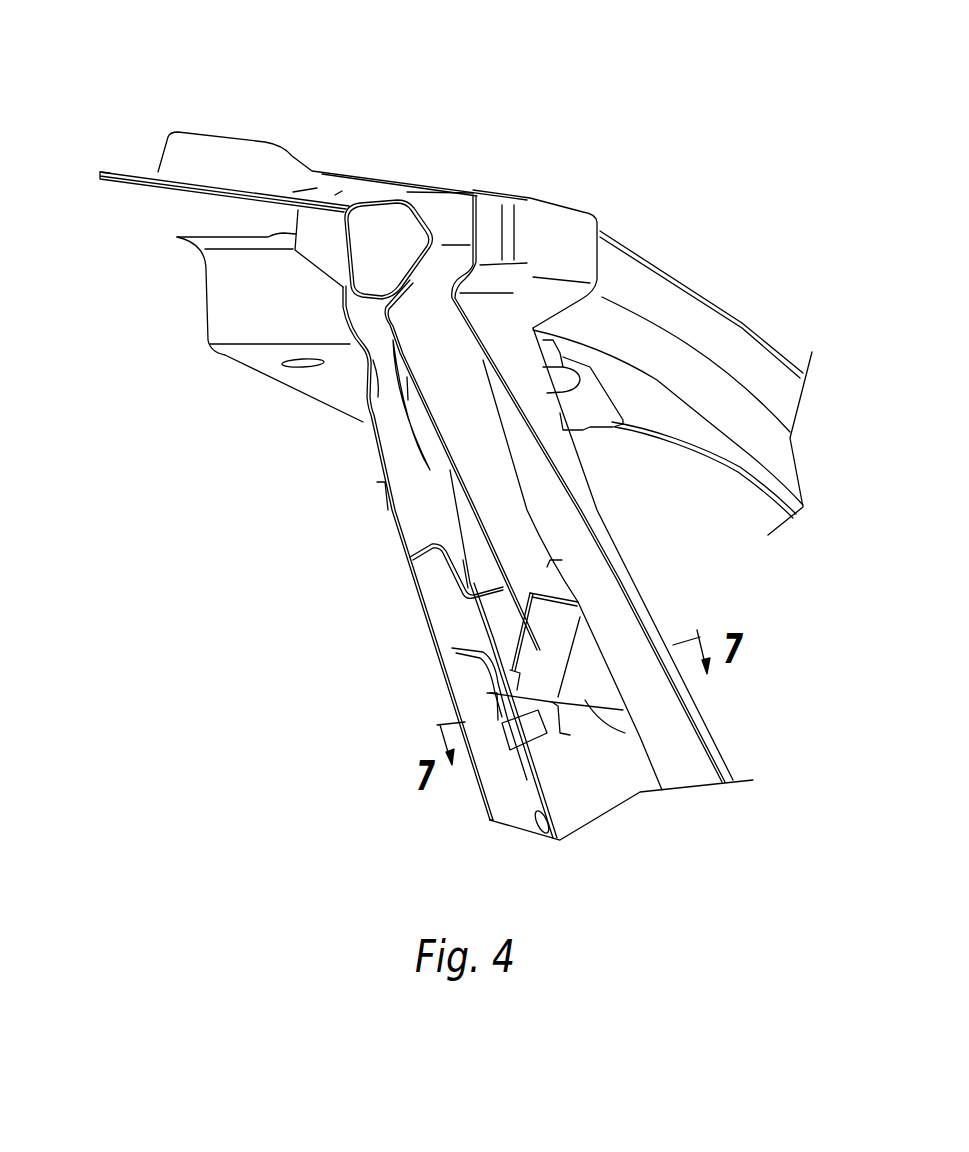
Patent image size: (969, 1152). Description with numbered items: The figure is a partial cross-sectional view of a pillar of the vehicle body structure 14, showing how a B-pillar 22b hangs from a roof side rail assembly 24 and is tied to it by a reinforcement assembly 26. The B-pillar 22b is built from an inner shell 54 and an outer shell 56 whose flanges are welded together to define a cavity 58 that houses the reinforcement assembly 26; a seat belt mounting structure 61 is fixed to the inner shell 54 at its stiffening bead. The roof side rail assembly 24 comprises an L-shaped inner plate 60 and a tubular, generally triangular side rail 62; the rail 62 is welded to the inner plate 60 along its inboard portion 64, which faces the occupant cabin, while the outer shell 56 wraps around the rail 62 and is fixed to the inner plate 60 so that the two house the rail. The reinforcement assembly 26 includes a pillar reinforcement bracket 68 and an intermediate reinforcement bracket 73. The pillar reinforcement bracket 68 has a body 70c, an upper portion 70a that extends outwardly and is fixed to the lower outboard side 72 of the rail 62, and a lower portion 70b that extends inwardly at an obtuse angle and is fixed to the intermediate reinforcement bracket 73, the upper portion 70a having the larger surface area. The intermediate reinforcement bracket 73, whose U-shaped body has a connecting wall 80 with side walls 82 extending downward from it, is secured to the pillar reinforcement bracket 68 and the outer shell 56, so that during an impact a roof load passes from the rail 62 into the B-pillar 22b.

The vehicle body structure 14 is at (183, 386).
The B-pillar 22b is at (396, 590).
The roof side rail assembly 24 is at (172, 150).
The reinforcement assembly 26 is at (432, 497).
The inner shell 54 is at (535, 803).
The outer shell 56 is at (683, 770).
The cavity 58 is at (412, 571).
The inner plate 60 is at (358, 182).
The seat belt mounting structure 61 is at (494, 706).
The side rail 62 is at (635, 252).
The inboard portion 64 is at (367, 239).
The pillar reinforcement bracket 68 is at (455, 448).
The upper portion 70a is at (433, 283).
The lower portion 70b is at (513, 643).
The body 70c is at (482, 437).
The lower outboard side 72 is at (610, 335).
The intermediate reinforcement bracket 73 is at (567, 628).
The connecting wall 80 is at (537, 677).
The side wall 82 is at (585, 700).